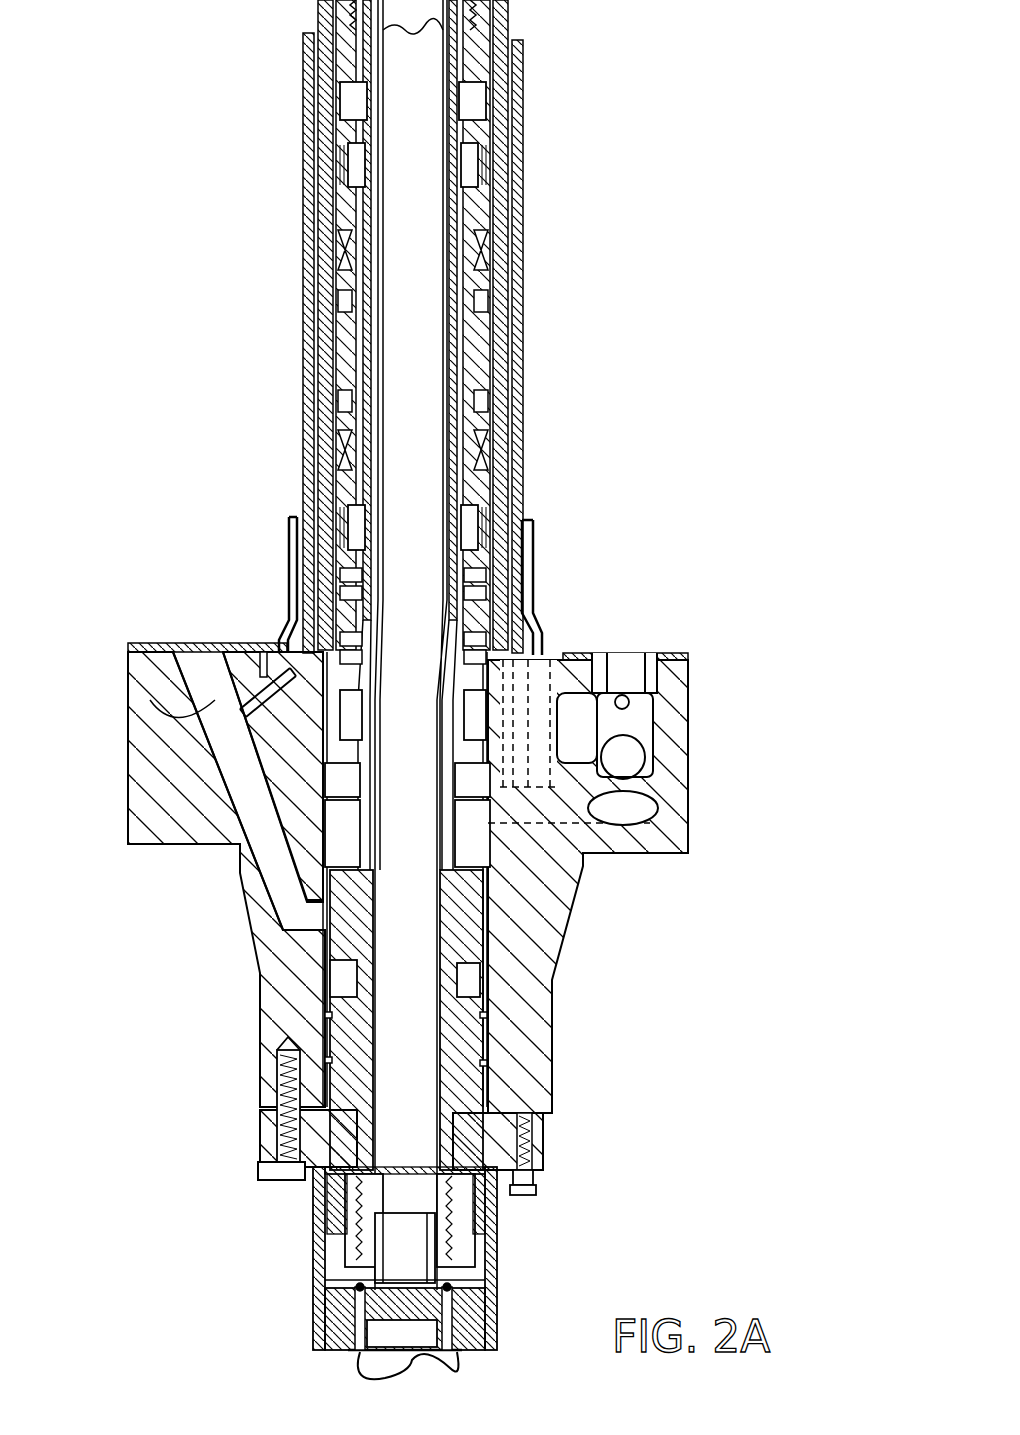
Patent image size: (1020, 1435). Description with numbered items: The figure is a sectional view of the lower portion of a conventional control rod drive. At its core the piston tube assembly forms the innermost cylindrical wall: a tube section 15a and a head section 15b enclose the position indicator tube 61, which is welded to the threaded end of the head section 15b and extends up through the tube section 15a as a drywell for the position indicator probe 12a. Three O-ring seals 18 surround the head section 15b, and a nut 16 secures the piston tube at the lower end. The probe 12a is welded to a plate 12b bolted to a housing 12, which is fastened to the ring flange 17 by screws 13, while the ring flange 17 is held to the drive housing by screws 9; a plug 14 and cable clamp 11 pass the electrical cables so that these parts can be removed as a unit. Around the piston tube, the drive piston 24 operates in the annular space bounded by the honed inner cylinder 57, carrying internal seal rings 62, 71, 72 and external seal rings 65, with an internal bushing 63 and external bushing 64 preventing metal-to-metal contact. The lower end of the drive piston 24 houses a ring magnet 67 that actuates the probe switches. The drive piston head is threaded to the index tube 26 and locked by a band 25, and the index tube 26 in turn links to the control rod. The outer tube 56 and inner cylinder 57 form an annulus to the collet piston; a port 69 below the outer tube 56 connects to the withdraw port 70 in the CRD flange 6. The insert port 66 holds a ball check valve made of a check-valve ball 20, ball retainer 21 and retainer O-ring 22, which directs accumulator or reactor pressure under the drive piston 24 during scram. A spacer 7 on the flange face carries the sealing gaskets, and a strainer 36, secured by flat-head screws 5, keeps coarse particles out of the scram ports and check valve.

The flat-head screws 5 is at (265, 650).
The CRD flange 6 is at (128, 790).
The spacer 7 is at (150, 642).
The screws 9 is at (290, 1168).
The cable clamp 11 is at (360, 1360).
The housing 12 is at (490, 1310).
The position indicator probe 12a is at (420, 1272).
The plate 12b is at (320, 1270).
The screws 13 is at (530, 1190).
The plug 14 is at (460, 1325).
The tube section 15a is at (440, 772).
The head section 15b is at (448, 900).
The nut 16 is at (497, 1229).
The ring flange 17 is at (548, 1120).
The O-ring seals 18 is at (487, 1063).
The check-valve ball 20 is at (660, 770).
The ball retainer 21 is at (630, 755).
The retainer O-ring 22 is at (655, 680).
The drive piston 24 is at (345, 350).
The band 25 is at (523, 48).
The index tube 26 is at (480, 2).
The strainer 36 is at (530, 565).
The outer tube 56 is at (530, 190).
The inner cylinder 57 is at (505, 340).
The position indicator tube 61 is at (432, 74).
The internal seal ring 62 is at (336, 112).
The internal bushing 63 is at (365, 160).
The external bushing 64 is at (490, 250).
The external seal rings 65 is at (483, 298).
The insert port 66 is at (625, 665).
The ring magnet 67 is at (345, 712).
The port 69 is at (200, 665).
The withdraw port 70 is at (210, 690).
The internal seal ring 71 is at (355, 655).
The internal seal ring 72 is at (355, 592).